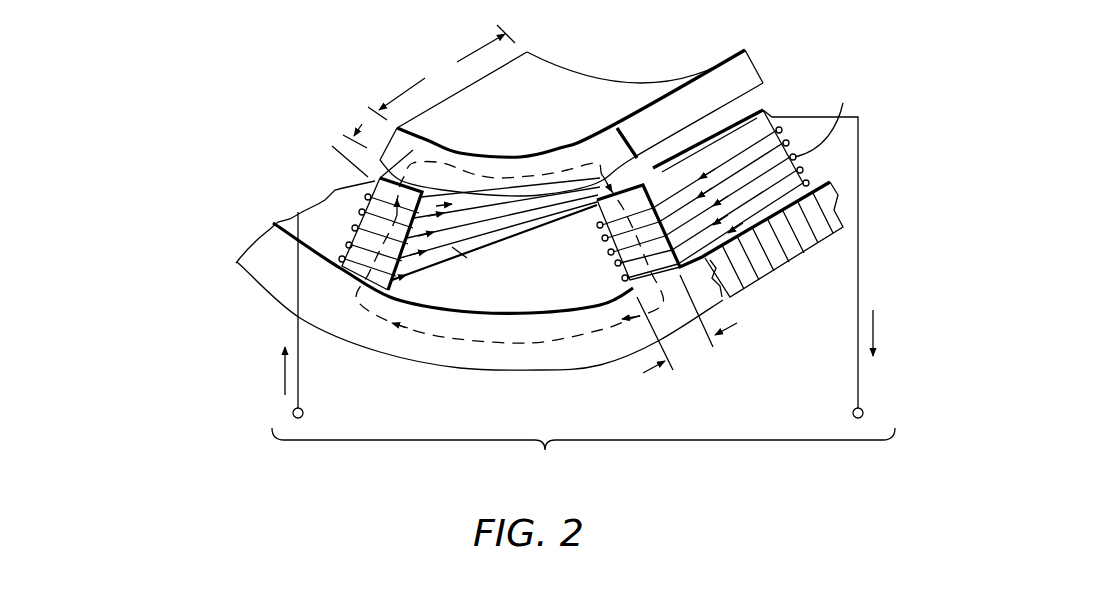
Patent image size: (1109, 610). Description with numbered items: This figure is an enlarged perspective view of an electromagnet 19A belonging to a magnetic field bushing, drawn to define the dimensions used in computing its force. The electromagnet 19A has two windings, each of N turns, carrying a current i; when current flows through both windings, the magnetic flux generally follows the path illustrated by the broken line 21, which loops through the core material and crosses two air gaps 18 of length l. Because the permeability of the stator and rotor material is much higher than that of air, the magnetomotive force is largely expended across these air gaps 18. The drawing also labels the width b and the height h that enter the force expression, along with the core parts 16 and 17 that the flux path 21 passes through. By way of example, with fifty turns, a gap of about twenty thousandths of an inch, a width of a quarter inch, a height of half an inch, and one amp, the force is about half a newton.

The core body 16 is at (597, 366).
The curved plate 17 is at (600, 77).
The air gap 18 is at (339, 158).
The electromagnet 19A is at (587, 285).
The broken line 21 is at (445, 340).